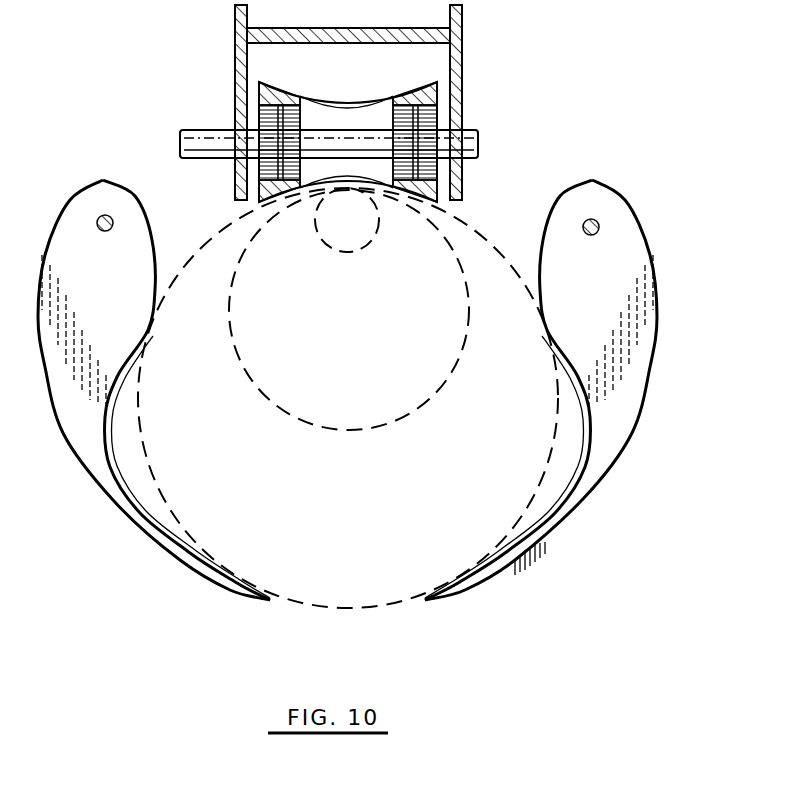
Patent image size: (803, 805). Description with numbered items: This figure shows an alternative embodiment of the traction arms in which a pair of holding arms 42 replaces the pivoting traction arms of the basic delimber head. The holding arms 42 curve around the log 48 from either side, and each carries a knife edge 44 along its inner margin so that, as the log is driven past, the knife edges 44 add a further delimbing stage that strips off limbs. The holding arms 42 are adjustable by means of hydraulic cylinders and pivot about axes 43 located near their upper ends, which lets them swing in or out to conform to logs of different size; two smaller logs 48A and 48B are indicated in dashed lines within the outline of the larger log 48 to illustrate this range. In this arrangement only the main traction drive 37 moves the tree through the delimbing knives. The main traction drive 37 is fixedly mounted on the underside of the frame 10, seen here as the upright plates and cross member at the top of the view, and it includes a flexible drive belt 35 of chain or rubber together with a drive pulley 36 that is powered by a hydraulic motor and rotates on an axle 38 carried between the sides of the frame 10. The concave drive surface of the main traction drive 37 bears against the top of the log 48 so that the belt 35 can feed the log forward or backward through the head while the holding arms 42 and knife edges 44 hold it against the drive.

The frame 10 is at (233, 75).
The flexible drive belt 35 is at (387, 193).
The drive pulley 36 is at (423, 130).
The main traction drive 37 is at (350, 100).
The axle 38 is at (190, 137).
The holding arm 42 is at (632, 313).
The pivot axis 43 is at (103, 214).
The knife edge 44 is at (187, 550).
The log 48 is at (370, 612).
The log 48A is at (370, 432).
The log 48B is at (333, 242).